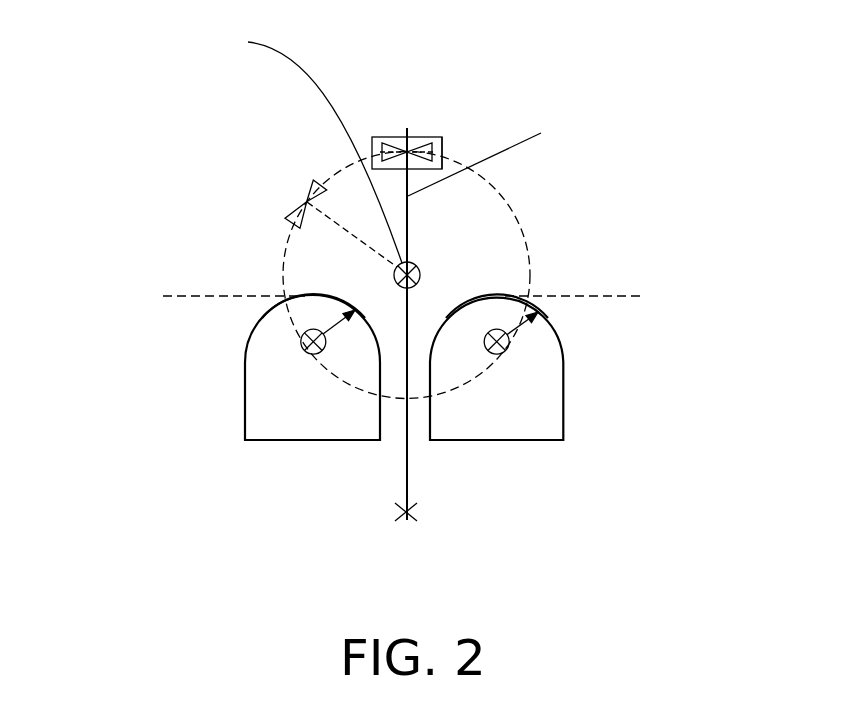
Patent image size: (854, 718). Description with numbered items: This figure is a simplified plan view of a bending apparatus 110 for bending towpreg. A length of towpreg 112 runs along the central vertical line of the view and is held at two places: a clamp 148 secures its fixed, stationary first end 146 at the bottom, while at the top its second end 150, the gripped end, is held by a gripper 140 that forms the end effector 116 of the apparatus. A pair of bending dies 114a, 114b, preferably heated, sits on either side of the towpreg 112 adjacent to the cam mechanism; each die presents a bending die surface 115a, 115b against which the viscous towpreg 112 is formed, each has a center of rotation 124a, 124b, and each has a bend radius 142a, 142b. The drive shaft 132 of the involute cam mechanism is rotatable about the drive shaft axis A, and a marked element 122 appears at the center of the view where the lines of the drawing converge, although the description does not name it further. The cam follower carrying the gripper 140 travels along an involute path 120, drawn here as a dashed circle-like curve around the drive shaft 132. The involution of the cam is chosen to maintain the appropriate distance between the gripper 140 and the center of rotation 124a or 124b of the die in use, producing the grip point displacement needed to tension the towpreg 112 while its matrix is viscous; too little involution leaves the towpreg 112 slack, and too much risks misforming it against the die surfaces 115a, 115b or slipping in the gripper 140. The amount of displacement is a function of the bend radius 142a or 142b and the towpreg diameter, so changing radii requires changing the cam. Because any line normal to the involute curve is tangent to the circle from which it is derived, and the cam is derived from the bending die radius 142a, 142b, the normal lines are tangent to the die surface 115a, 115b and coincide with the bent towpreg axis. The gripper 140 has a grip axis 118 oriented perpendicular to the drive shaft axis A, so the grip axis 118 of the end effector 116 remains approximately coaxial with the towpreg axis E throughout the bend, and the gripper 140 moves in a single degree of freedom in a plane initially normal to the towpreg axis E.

The bending apparatus 110 is at (630, 133).
The towpreg 112 is at (410, 493).
The bending die 114a is at (340, 441).
The bending die 114b is at (520, 441).
The bending die surface 115a is at (348, 305).
The bending die surface 115b is at (468, 297).
The end effector 116 is at (425, 135).
The grip axis 118 is at (496, 156).
The involute path 120 is at (333, 177).
The center of rotation 122 is at (420, 272).
The center of rotation 124a is at (301, 340).
The center of rotation 124b is at (501, 354).
The drive shaft 132 is at (300, 143).
The gripper 140 is at (442, 139).
The bend radius 142a is at (327, 320).
The bend radius 142b is at (524, 322).
The first end 146 is at (404, 480).
The clamp 148 is at (418, 514).
The second end 150 is at (408, 128).
The drive shaft axis A is at (417, 262).
The towpreg axis E is at (313, 185).